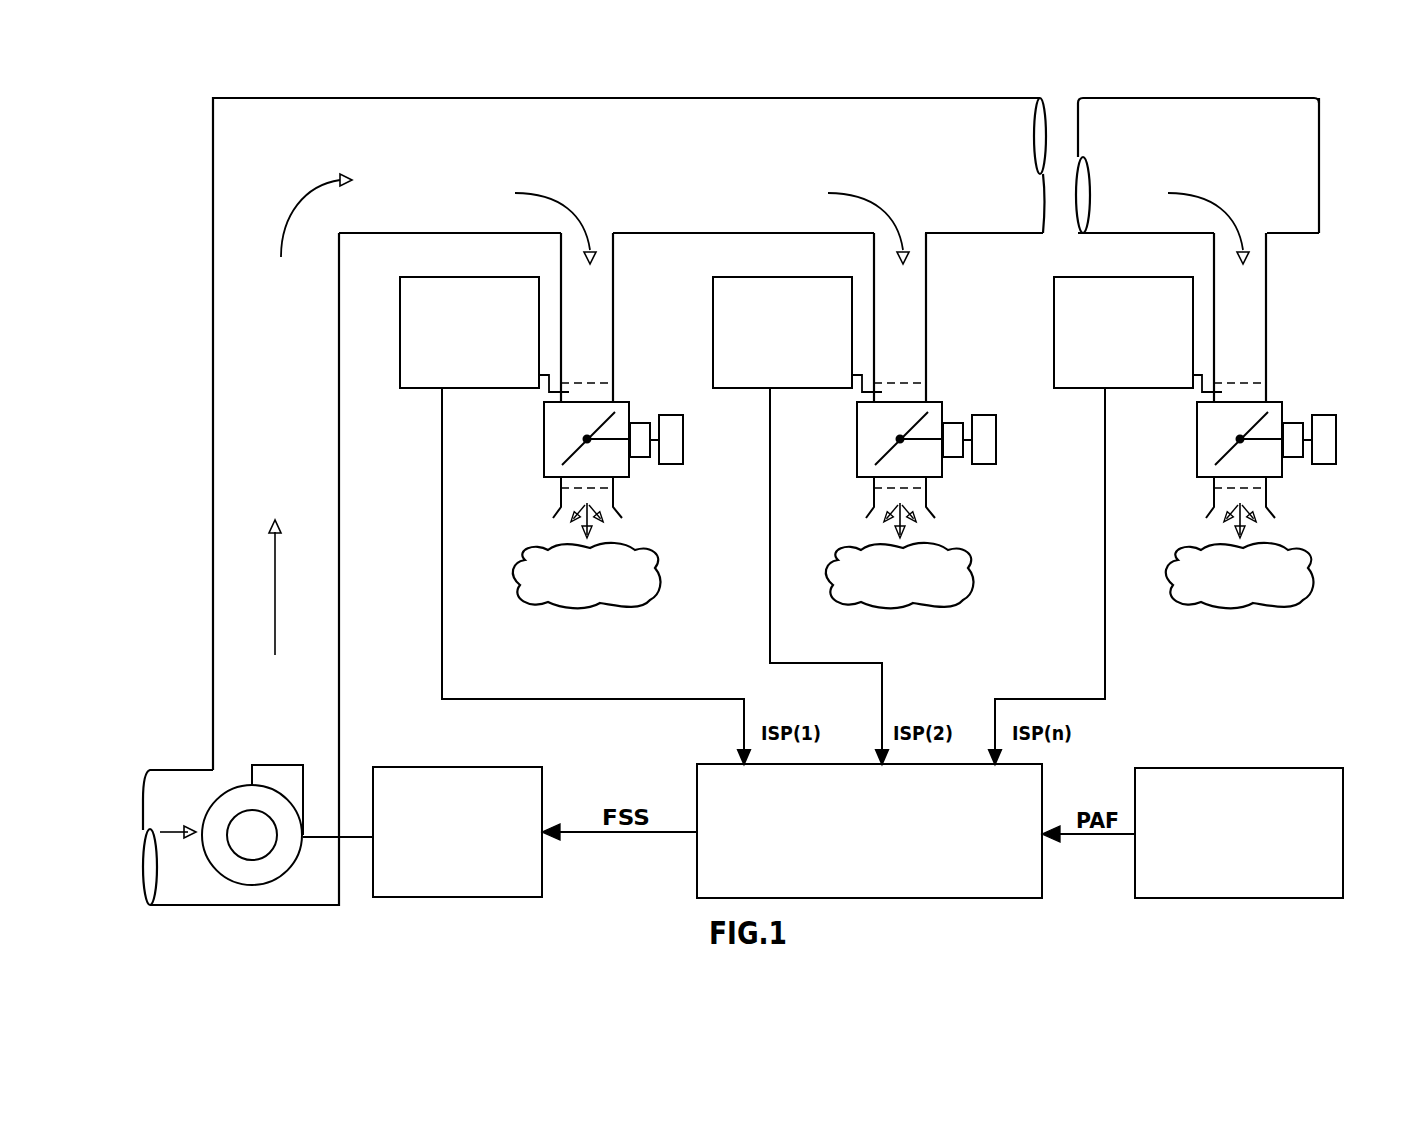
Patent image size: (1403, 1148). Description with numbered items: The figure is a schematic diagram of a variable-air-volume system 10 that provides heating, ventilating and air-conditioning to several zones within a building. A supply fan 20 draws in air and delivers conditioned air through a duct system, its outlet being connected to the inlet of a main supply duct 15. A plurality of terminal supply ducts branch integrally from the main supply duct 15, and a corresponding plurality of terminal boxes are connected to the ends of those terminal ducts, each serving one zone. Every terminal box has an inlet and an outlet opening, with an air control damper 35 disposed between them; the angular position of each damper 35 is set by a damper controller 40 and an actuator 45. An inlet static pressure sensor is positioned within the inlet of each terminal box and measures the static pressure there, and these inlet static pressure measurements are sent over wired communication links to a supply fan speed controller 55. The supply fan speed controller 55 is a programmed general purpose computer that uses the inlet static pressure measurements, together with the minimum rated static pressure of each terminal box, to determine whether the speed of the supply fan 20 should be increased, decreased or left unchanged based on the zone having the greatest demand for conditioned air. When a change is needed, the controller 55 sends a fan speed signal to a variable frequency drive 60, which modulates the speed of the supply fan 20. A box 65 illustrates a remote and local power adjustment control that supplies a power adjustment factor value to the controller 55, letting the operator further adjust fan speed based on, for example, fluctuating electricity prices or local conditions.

The variable-air-volume system 10 is at (1357, 79).
The main supply duct 15 is at (213, 474).
The supply fan 20 is at (266, 825).
The air control damper 35 is at (579, 447).
The damper controller 40 is at (683, 455).
The actuator 45 is at (643, 423).
The supply fan speed controller 55 is at (869, 831).
The variable frequency drive 60 is at (457, 832).
The box illustrating power adjustment factor 65 is at (1239, 833).